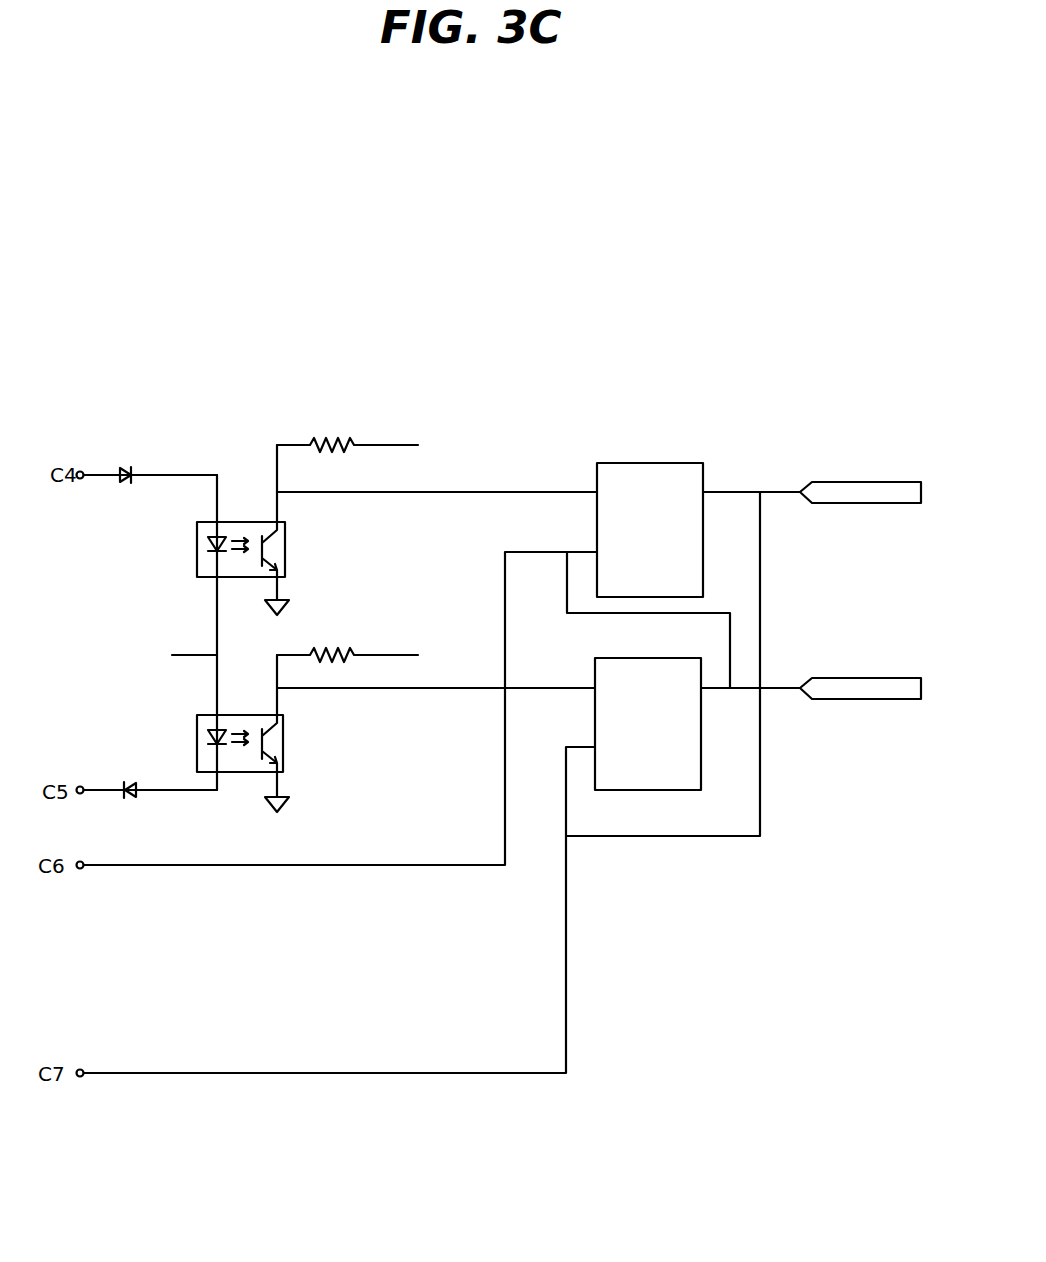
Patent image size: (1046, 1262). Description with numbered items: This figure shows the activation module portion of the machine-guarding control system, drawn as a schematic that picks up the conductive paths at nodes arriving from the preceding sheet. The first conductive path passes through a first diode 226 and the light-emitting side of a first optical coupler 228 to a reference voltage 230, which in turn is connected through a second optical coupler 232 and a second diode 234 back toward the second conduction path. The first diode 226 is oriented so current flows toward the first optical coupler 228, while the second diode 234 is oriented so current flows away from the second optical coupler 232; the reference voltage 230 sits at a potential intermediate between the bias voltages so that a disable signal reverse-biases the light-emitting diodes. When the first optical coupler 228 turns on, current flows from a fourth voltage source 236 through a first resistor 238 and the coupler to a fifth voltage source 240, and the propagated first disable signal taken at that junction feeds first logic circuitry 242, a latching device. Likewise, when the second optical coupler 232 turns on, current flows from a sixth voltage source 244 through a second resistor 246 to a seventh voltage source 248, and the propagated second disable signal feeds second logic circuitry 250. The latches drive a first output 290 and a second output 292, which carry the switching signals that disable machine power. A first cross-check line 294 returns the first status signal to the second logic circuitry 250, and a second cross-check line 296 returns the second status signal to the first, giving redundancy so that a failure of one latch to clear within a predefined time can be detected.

The diode CR1 226 is at (122, 466).
The first optical coupler 228 is at (197, 545).
The reference voltage 230 is at (124, 645).
The second optical coupler 232 is at (197, 738).
The diode CR2 234 is at (131, 804).
The fourth voltage source 236 is at (413, 430).
The resistor R1 238 is at (341, 433).
The fifth voltage source 240 is at (280, 597).
The first logic circuitry 242 is at (656, 445).
The sixth voltage source 244 is at (413, 641).
The resistor R2 246 is at (331, 626).
The seventh voltage source 248 is at (283, 793).
The second logic circuitry 250 is at (656, 640).
The first output 290 is at (855, 482).
The second output 292 is at (848, 678).
The first cross-check line 294 is at (700, 606).
The second cross-check line 296 is at (698, 832).